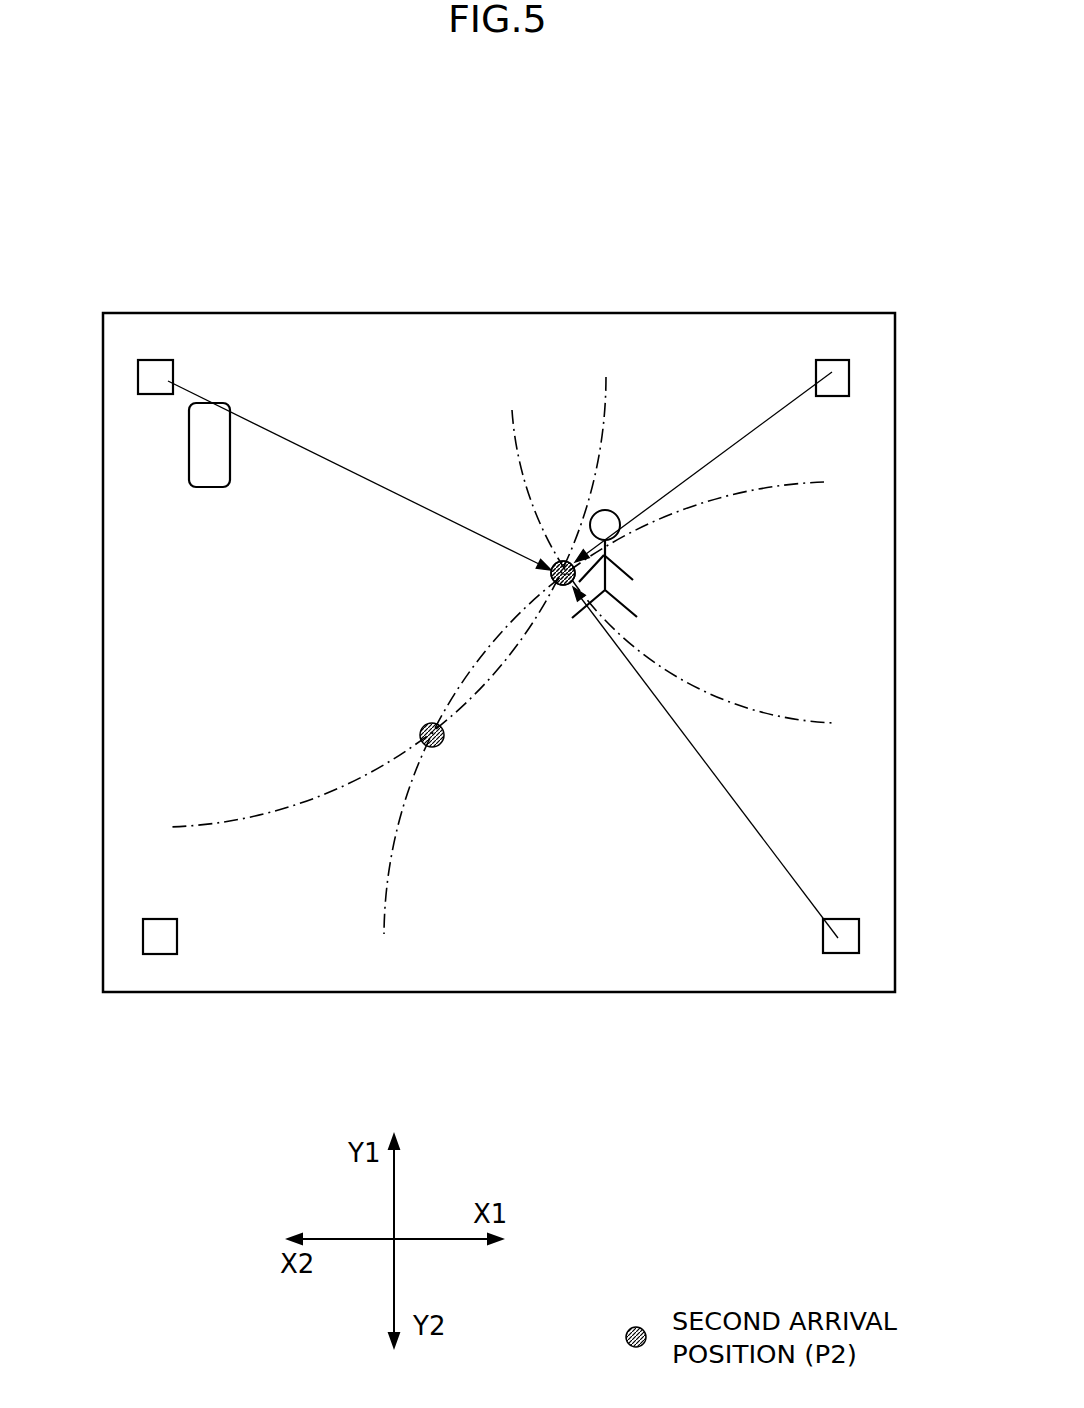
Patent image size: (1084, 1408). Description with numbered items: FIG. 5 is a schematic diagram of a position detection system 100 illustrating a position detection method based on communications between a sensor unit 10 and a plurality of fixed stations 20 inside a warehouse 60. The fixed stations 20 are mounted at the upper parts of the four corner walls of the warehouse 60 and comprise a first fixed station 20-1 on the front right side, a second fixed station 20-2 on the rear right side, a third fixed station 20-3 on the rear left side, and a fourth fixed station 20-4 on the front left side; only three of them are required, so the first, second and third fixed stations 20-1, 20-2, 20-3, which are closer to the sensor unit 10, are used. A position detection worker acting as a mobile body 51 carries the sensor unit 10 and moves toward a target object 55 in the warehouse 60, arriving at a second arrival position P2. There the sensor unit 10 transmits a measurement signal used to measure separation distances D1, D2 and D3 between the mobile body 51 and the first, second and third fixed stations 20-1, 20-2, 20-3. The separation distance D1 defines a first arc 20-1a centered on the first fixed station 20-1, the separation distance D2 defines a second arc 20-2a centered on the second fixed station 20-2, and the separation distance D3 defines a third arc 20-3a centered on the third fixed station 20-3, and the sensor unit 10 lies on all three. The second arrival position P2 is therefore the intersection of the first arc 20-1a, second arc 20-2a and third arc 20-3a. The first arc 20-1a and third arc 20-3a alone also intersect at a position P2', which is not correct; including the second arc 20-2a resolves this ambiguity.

The position estimation system 100 is at (701, 228).
The warehouse 60 is at (410, 313).
The fixed stations 20 is at (742, 1115).
The first fixed station 20-1 is at (838, 940).
The second fixed station 20-2 is at (838, 375).
The third fixed station 20-3 is at (158, 370).
The fourth fixed station 20-4 is at (168, 930).
The first arc 20-1a is at (383, 852).
The second arc 20-2a is at (725, 702).
The third arc 20-3a is at (277, 810).
The target object 55 is at (210, 468).
The mobile body 51 is at (635, 552).
The sensor unit 10 is at (543, 577).
The separation distance D1 is at (750, 828).
The separation distance D2 is at (689, 475).
The separation distance D3 is at (313, 453).
The second arrival position P2 is at (569, 656).
The position P2' is at (407, 725).